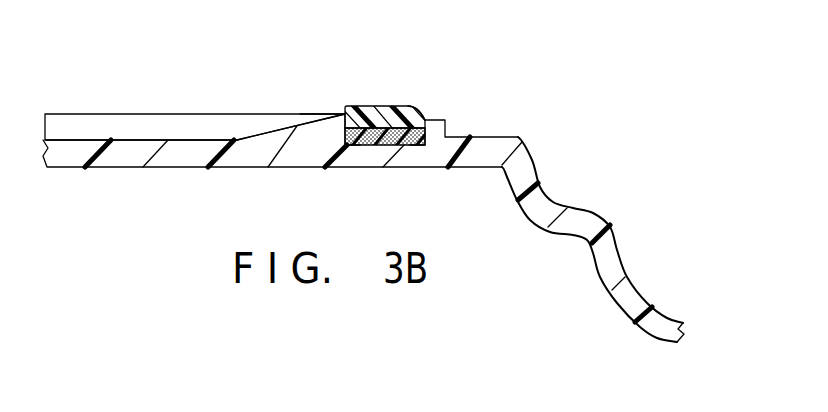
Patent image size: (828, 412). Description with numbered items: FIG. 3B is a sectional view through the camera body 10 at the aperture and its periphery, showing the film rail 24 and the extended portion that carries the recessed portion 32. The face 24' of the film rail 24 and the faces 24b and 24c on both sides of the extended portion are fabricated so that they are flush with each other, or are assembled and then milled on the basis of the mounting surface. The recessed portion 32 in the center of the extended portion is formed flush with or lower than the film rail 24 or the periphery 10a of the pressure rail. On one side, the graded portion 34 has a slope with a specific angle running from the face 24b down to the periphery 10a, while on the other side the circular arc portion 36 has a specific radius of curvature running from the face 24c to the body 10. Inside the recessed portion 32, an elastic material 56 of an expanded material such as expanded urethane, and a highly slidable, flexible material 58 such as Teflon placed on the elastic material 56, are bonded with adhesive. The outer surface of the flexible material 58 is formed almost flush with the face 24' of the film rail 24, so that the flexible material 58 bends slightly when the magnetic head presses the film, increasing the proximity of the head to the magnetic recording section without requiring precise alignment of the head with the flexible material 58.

The camera body 10 is at (560, 198).
The periphery 10a is at (152, 140).
The film rail 24 is at (195, 103).
The graded portion 34 is at (260, 130).
The face of the film rail 24' is at (322, 87).
The face of the extended portion 24b is at (348, 106).
The face of the extended portion 24c is at (437, 112).
The circular arc portion 36 is at (447, 119).
The recessed portion 32 is at (400, 145).
The elastic material 56 is at (345, 146).
The flexible material 58 is at (415, 146).